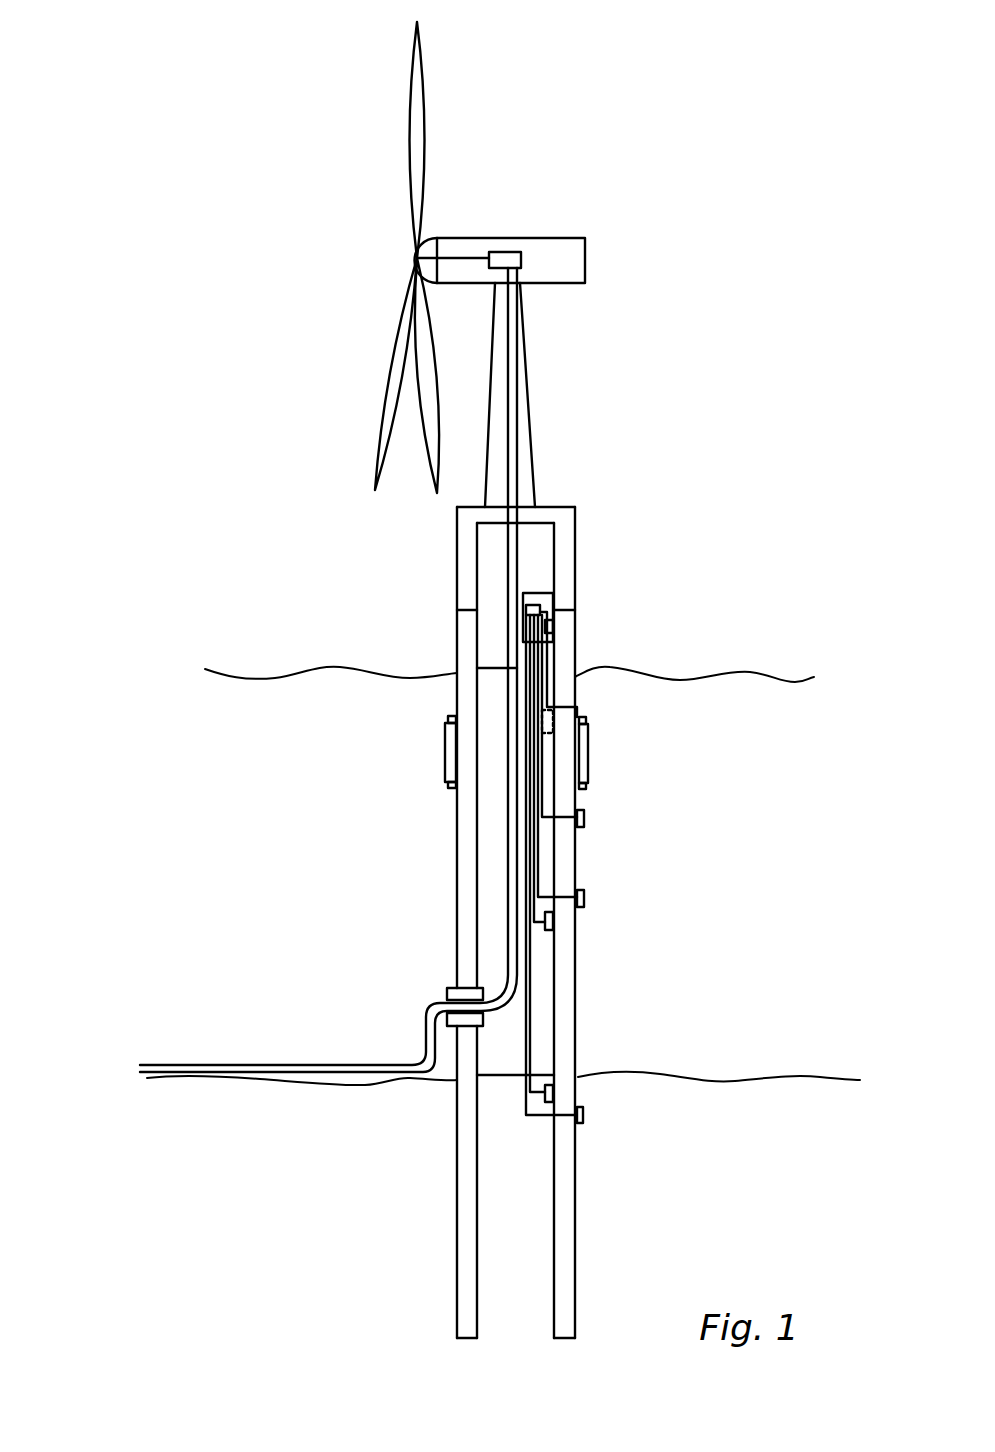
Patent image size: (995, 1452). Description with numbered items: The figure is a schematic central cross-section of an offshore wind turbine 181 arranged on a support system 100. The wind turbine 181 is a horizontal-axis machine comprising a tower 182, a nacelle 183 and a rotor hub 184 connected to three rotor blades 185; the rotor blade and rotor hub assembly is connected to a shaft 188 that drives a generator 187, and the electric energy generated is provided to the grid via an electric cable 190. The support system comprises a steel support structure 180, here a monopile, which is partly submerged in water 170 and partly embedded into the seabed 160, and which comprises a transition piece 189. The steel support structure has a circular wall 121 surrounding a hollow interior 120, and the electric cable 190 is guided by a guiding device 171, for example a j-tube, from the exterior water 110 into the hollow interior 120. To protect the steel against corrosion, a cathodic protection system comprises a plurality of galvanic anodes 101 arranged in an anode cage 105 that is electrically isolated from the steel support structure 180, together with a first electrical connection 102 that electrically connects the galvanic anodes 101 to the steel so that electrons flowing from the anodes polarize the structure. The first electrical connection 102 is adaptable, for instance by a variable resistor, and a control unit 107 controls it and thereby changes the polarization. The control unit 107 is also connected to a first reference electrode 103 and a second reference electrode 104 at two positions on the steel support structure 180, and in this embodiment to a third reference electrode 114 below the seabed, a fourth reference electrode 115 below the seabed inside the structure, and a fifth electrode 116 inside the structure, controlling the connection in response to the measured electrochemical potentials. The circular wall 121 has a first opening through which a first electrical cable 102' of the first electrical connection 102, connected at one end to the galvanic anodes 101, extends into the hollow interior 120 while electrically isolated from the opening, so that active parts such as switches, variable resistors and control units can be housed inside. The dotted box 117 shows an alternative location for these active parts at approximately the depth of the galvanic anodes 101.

The support system 100 is at (585, 525).
The galvanic anodes 101 is at (448, 765).
The first electrical connection 102 is at (592, 664).
The first electrical cable 102' is at (594, 678).
The first reference electrode 103 is at (584, 812).
The second reference electrode 104 is at (587, 890).
The anode cage 105 is at (452, 718).
The control unit 107 is at (543, 606).
The exterior water 110 is at (342, 929).
The third reference electrode 114 is at (587, 1127).
The fourth reference electrode 115 is at (477, 868).
The fifth electrode 116 is at (553, 918).
The dotted box 117 is at (553, 714).
The hollow interior 120 is at (482, 1059).
The circular wall 121 is at (568, 942).
The seabed 160 is at (717, 1068).
The water 170 is at (737, 672).
The guiding device 171 is at (455, 988).
The steel support structure 180 is at (477, 868).
The offshore wind turbine 181 is at (677, 164).
The tower 182 is at (528, 415).
The nacelle 183 is at (490, 238).
The rotor hub 184 is at (435, 240).
The rotor blades 185 is at (408, 138).
The generator 187 is at (520, 258).
The shaft 188 is at (452, 257).
The transition piece 189 is at (458, 567).
The electric cable 190 is at (508, 833).